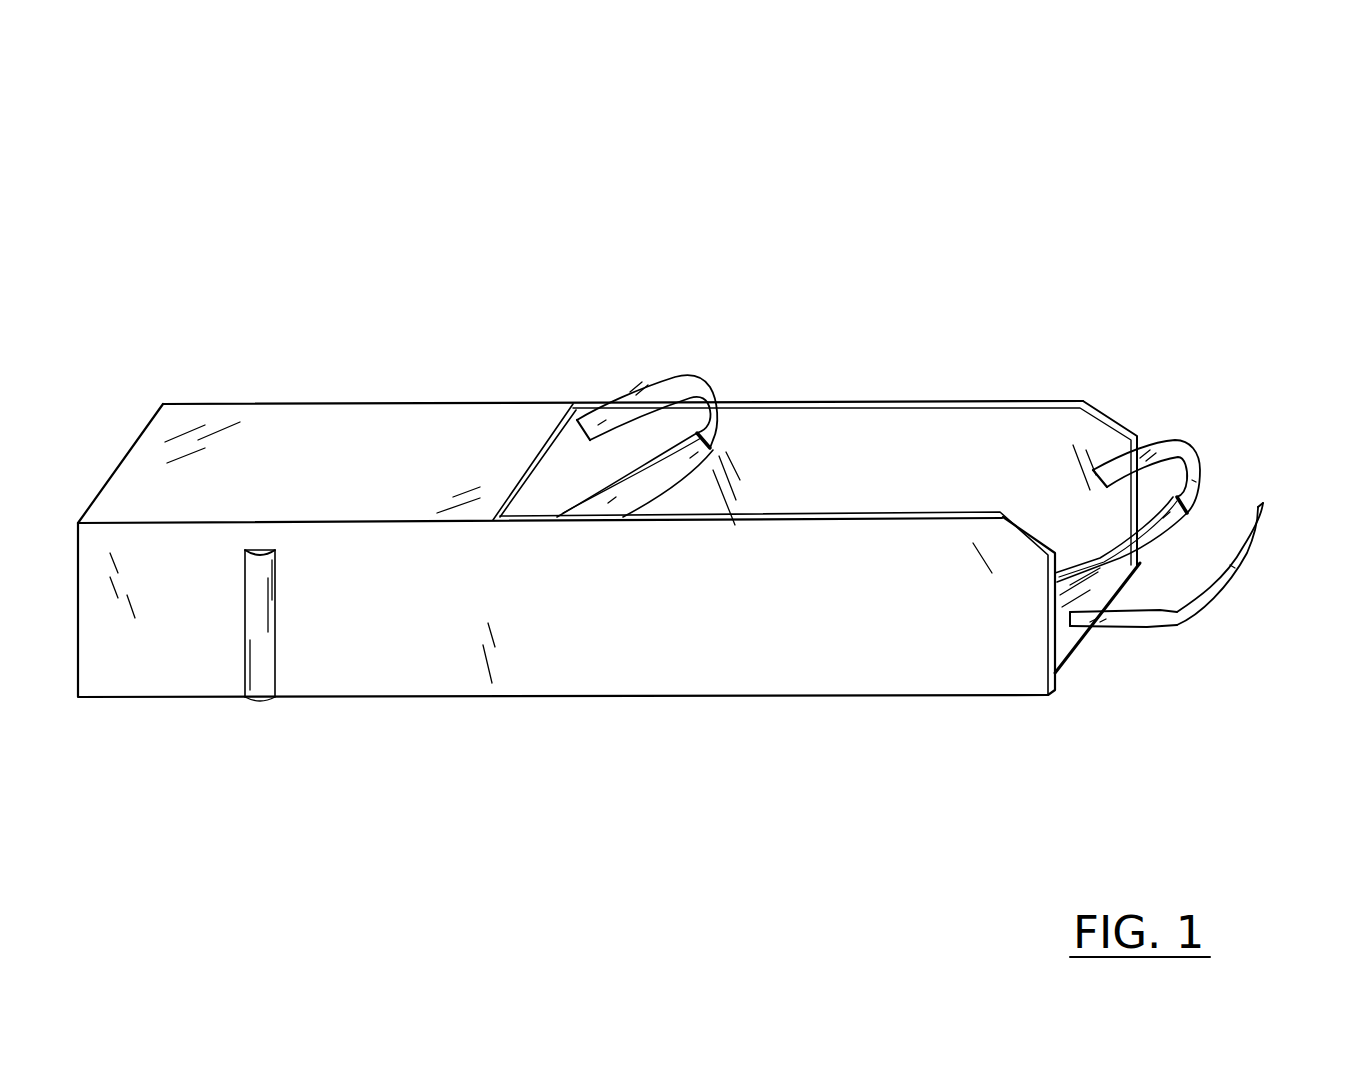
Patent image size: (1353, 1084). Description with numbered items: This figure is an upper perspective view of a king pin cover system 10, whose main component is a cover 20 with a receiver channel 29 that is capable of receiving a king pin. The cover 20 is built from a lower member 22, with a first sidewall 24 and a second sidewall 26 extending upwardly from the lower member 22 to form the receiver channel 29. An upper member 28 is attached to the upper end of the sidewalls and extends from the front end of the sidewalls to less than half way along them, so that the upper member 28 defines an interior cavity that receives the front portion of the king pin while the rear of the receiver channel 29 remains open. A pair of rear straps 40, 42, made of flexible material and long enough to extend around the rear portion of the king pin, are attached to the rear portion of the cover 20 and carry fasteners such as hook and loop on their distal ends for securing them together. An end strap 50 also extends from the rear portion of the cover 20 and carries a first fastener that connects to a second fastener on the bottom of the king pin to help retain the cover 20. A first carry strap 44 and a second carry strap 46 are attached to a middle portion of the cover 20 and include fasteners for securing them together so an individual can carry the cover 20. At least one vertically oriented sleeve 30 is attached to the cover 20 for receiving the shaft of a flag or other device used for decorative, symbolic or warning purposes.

The king pin cover system 10 is at (1086, 152).
The cover 20 is at (712, 714).
The lower member 22 is at (1063, 647).
The first sidewall 24 is at (917, 663).
The second sidewall 26 is at (1035, 403).
The upper member 28 is at (377, 428).
The receiver channel 29 is at (828, 425).
The sleeve 30 is at (262, 690).
The rear strap 40 is at (1183, 527).
The rear strap 42 is at (1167, 442).
The first carry strap 44 is at (633, 502).
The second carry strap 46 is at (647, 397).
The end strap 50 is at (1208, 607).